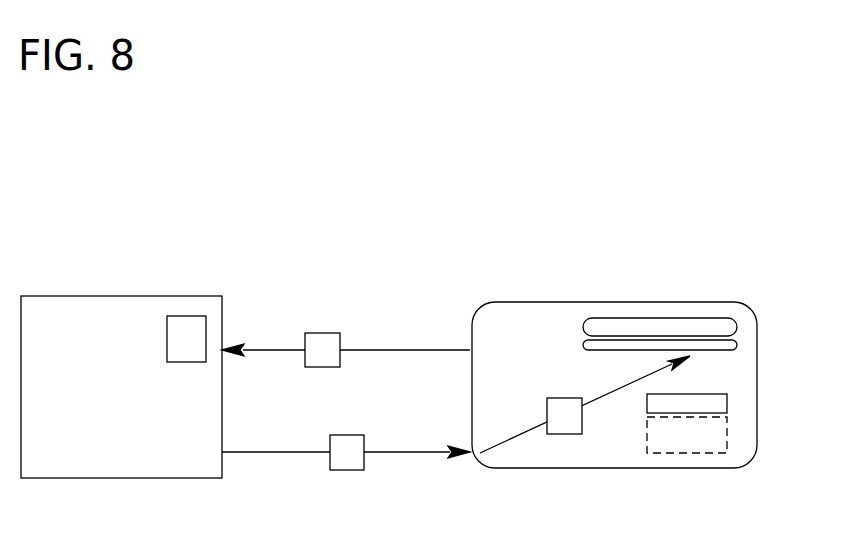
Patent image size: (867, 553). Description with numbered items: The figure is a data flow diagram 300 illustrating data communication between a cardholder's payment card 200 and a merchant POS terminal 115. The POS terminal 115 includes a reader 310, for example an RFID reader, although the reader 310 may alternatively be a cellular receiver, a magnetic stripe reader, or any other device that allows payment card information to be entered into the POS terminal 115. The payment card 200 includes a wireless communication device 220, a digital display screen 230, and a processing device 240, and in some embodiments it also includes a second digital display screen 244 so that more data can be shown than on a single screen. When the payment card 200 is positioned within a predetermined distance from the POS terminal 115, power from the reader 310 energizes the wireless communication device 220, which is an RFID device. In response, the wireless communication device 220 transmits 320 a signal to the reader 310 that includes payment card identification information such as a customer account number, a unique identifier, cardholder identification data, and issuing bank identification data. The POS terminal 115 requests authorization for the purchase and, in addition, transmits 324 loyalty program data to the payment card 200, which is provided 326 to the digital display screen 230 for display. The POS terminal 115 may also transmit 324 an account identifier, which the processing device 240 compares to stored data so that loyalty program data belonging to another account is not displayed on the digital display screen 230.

The POS terminal 115 is at (115, 296).
The reader 310 is at (206, 326).
The transmits (signal from RFID device to reader) 320 is at (404, 350).
The transmits (loyalty program data to payment card) 324 is at (400, 455).
The payment card 200 is at (612, 288).
The data flow diagram 300 is at (460, 200).
The digital display screen 230 is at (713, 318).
The second digital display screen 244 is at (737, 341).
The provided (loyalty program data to display screen) 326 is at (653, 375).
The wireless communication device 220 is at (727, 403).
The processing device 240 is at (661, 453).